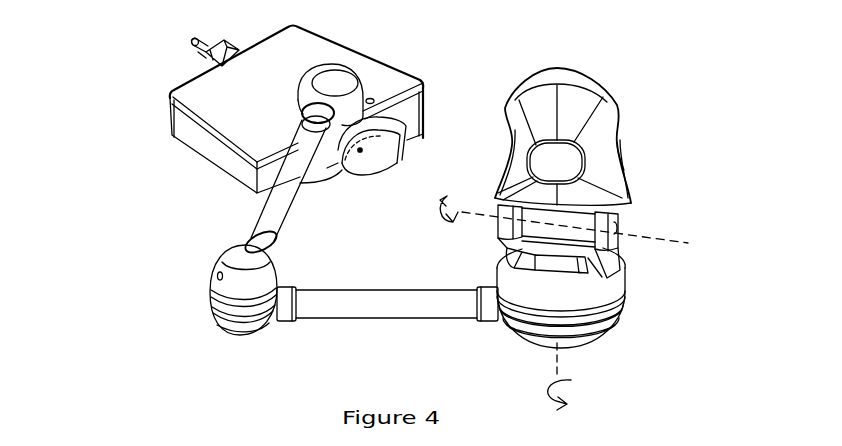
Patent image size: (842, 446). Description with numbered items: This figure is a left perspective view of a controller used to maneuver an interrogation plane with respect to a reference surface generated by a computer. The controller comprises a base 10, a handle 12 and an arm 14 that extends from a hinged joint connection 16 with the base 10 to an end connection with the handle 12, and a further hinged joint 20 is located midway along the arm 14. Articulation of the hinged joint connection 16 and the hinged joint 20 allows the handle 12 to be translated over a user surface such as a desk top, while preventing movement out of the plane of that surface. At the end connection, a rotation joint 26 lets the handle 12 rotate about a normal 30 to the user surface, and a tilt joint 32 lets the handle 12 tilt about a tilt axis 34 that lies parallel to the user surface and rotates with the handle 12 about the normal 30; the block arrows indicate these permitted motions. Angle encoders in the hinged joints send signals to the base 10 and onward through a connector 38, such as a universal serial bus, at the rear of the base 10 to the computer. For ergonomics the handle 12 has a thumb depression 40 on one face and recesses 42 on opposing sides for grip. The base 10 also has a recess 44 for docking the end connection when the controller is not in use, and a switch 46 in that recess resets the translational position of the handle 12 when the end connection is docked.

The base 10 is at (303, 38).
The handle 12 is at (610, 103).
The arm 14 is at (333, 292).
The hinged joint connection 16 is at (330, 76).
The hinged joint 20 is at (237, 258).
The rotation joint 26 is at (602, 318).
The normal 30 is at (560, 352).
The tilt joint 32 is at (608, 262).
The tilt axis 34 is at (655, 240).
The connector 38 is at (205, 43).
The thumb depression 40 is at (545, 157).
The recesses 42 is at (602, 158).
The recess 44 is at (378, 147).
The switch 46 is at (362, 153).